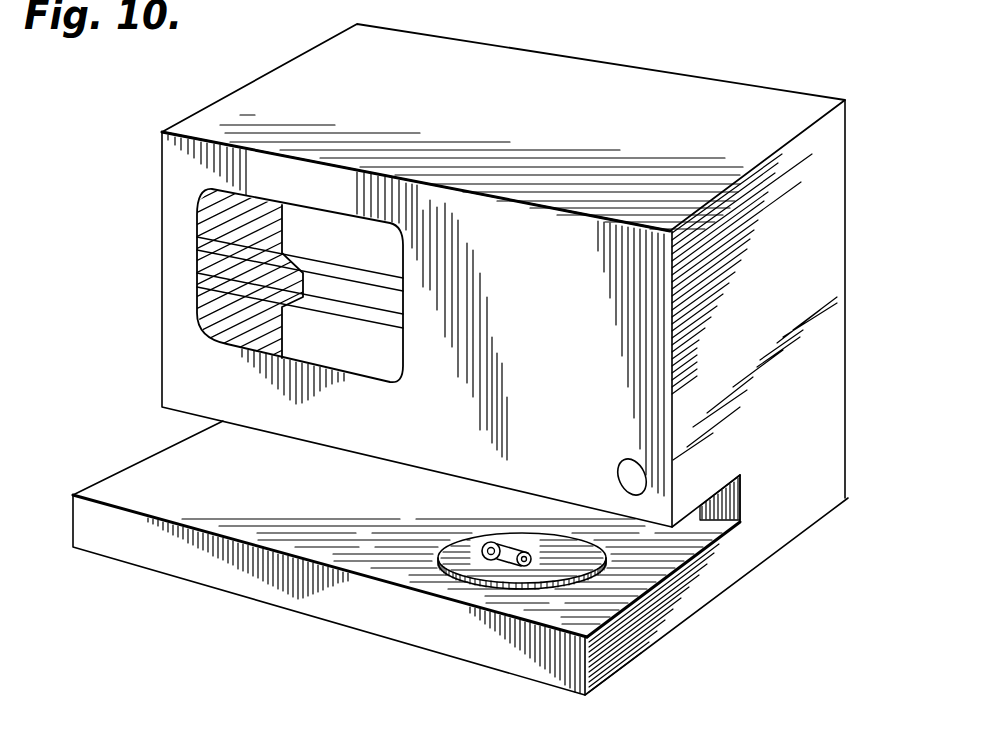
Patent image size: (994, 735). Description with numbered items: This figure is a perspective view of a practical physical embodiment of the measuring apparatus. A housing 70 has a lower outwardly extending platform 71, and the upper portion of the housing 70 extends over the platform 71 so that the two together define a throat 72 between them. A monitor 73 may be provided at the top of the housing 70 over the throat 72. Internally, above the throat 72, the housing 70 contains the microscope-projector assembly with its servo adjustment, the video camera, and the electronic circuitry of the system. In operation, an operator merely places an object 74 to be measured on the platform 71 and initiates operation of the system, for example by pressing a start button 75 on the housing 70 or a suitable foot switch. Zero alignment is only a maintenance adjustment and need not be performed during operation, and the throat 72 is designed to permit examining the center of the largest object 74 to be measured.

The housing 70 is at (817, 220).
The platform 71 is at (707, 587).
The throat 72 is at (188, 425).
The monitor 73 is at (208, 213).
The object 74 is at (493, 542).
The start button 75 is at (631, 462).